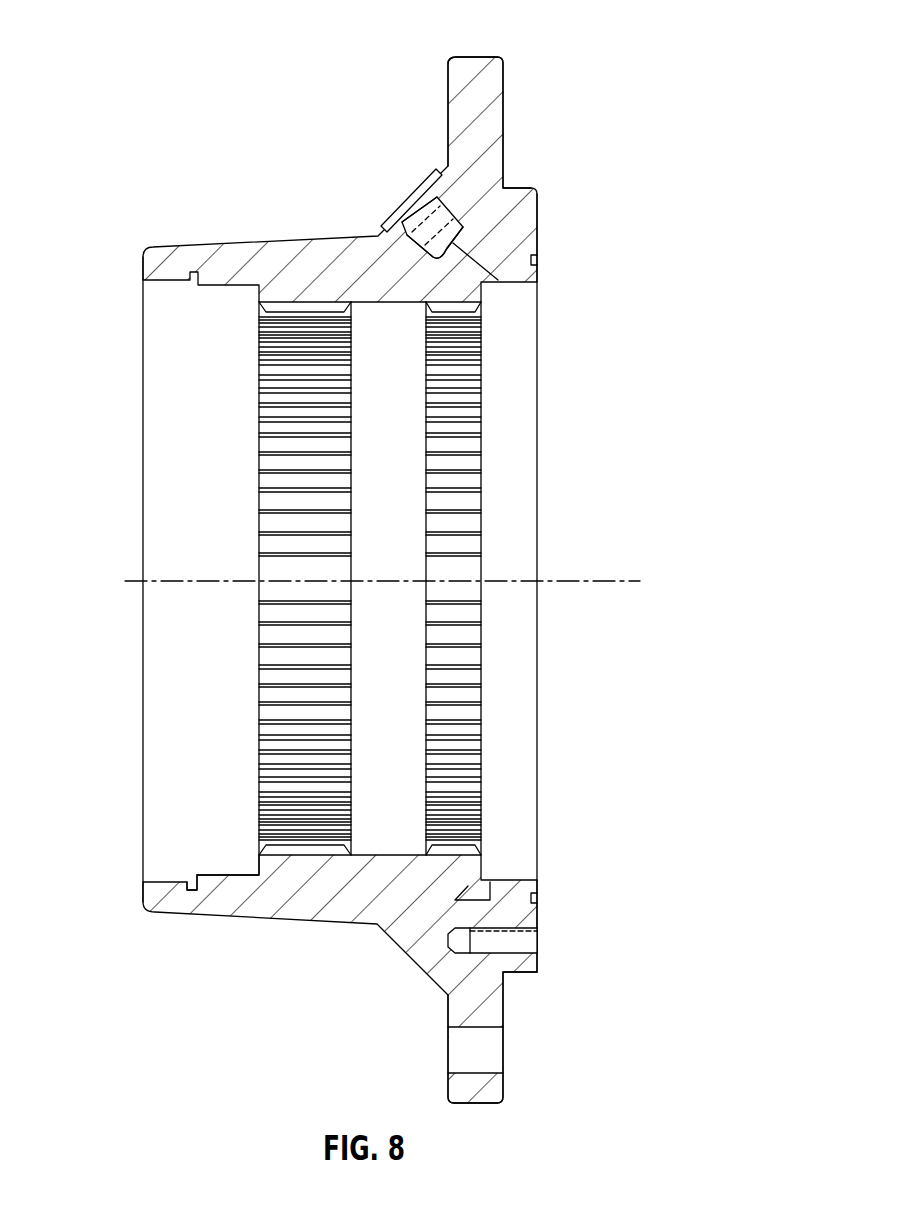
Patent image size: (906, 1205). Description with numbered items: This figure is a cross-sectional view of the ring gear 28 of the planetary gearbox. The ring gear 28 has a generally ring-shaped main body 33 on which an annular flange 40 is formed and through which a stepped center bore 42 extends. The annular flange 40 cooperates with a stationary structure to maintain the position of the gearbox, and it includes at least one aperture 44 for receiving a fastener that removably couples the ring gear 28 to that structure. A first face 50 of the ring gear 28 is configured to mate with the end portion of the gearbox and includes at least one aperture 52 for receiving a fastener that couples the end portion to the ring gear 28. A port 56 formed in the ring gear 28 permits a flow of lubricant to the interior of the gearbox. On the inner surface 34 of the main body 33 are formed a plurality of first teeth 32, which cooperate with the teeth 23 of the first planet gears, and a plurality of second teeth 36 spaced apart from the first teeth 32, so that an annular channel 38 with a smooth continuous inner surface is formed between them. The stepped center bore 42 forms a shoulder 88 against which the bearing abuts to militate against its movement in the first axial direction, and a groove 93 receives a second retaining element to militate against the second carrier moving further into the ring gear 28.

The ring gear 28 is at (256, 118).
The annular flange 40 is at (492, 75).
The main body 33 is at (273, 241).
The port 56 is at (412, 203).
The first face 50 is at (540, 243).
The stepped center bore 42 is at (157, 793).
The annular channel 38 is at (386, 303).
The second teeth 36 is at (268, 475).
The first teeth 32 is at (453, 413).
The teeth 23 is at (458, 530).
The inner surface 34 is at (408, 858).
The aperture 44 is at (478, 1070).
The aperture 52 is at (518, 943).
The groove 93 is at (198, 886).
The shoulder 88 is at (258, 876).